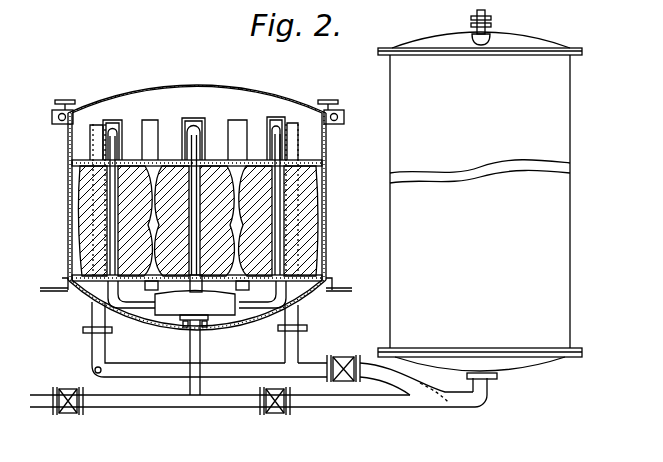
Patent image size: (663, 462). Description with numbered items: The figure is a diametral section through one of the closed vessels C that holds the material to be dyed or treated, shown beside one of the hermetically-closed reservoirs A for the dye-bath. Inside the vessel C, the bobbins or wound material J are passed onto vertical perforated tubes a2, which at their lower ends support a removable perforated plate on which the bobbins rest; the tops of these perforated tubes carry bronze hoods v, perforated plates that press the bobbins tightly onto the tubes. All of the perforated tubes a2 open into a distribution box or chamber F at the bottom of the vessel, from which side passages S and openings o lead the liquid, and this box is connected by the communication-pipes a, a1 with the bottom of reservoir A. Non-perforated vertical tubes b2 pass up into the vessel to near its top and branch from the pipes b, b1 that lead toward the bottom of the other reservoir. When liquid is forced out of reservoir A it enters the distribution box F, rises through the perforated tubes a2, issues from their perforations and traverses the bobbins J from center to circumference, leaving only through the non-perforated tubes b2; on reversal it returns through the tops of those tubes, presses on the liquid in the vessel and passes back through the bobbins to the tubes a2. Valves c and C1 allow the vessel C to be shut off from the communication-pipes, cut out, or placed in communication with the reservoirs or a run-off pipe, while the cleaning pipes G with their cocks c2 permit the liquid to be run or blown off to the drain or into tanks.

The reservoir A is at (480, 190).
The vessel C is at (326, 176).
The bobbins or wound material J is at (93, 198).
The distribution box or chamber F is at (195, 301).
The side chambers S is at (197, 294).
The bronze hoods v is at (194, 140).
The openings o is at (195, 306).
The communication-pipe a is at (462, 407).
The communication-pipe a1 is at (316, 404).
The vertical perforated tubes a2 is at (128, 143).
The communication-pipe b is at (406, 379).
The communication-pipe b1 is at (99, 348).
The non-perforated vertical tubes b2 is at (340, 117).
The valve c is at (341, 356).
The valve C1 is at (278, 411).
The cock c2 is at (62, 416).
The pipes for cleaning G is at (100, 407).